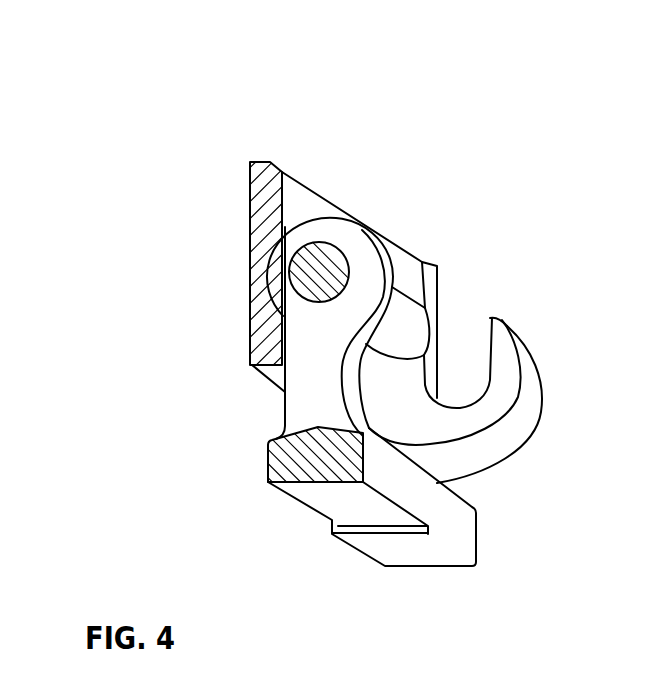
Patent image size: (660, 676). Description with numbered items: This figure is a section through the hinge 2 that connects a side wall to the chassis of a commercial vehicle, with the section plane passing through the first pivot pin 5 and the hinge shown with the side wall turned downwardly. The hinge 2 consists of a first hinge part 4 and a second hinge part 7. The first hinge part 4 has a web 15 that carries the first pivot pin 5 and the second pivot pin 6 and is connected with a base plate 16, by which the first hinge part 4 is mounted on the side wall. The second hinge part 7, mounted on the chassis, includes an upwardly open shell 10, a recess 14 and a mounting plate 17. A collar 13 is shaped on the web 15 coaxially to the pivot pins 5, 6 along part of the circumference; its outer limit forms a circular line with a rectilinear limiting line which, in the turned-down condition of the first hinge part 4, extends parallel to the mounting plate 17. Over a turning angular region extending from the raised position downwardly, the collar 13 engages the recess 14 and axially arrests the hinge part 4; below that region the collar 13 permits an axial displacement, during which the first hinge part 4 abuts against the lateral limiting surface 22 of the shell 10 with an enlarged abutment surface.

The hinge 2 is at (165, 521).
The first hinge part 4 is at (490, 536).
The first pivot pin 5 is at (315, 260).
The second pivot pin 6 is at (407, 317).
The second hinge part 7 is at (289, 152).
The shell 10 is at (523, 333).
The collar 13 is at (368, 255).
The recess 14 is at (273, 265).
The web 15 is at (308, 397).
The base plate 16 is at (320, 467).
The mounting plate 17 is at (257, 350).
The lateral limiting surface of the shell 22 is at (503, 378).